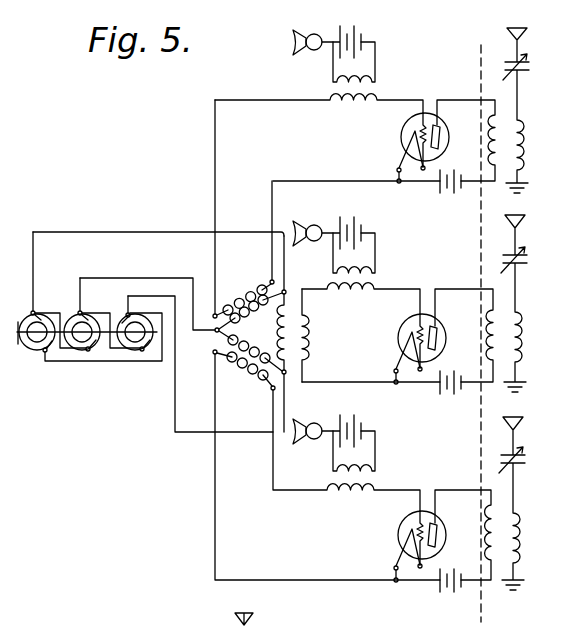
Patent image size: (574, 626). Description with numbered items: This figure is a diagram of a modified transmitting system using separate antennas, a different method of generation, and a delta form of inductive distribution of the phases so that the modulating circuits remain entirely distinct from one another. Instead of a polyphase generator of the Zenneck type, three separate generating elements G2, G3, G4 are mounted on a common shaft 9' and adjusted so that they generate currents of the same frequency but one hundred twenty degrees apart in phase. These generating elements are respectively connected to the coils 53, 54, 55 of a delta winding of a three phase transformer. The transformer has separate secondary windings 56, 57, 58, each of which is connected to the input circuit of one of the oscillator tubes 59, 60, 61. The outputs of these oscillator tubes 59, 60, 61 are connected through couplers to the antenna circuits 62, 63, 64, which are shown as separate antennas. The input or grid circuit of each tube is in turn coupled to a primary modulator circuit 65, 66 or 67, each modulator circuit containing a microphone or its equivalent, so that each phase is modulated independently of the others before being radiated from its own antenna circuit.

The common shaft 9' is at (87, 349).
The generating element G2 is at (37, 354).
The generating element G3 is at (82, 354).
The generating element G4 is at (135, 355).
The coil of delta winding 53 is at (286, 304).
The coil of delta winding 54 is at (281, 340).
The coil of delta winding 55 is at (292, 366).
The secondary winding 56 is at (243, 292).
The secondary winding 57 is at (307, 340).
The secondary winding 58 is at (244, 377).
The oscillator tube 59 is at (401, 137).
The oscillator tube 60 is at (404, 329).
The oscillator tube 61 is at (402, 546).
The antenna circuit 62 is at (523, 110).
The antenna circuit 63 is at (523, 303).
The antenna circuit 64 is at (520, 503).
The primary modulator circuit 65 is at (334, 54).
The primary modulator circuit 66 is at (334, 245).
The primary modulator circuit 67 is at (334, 443).